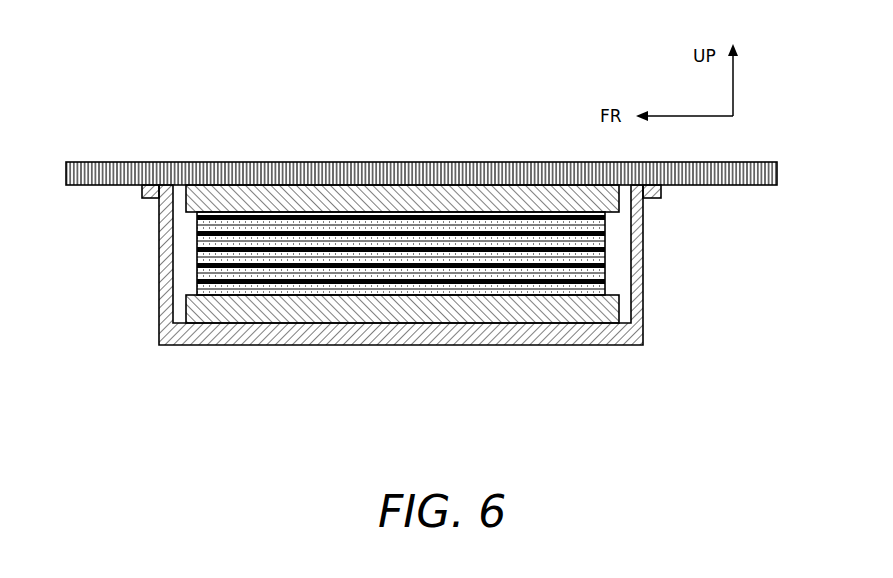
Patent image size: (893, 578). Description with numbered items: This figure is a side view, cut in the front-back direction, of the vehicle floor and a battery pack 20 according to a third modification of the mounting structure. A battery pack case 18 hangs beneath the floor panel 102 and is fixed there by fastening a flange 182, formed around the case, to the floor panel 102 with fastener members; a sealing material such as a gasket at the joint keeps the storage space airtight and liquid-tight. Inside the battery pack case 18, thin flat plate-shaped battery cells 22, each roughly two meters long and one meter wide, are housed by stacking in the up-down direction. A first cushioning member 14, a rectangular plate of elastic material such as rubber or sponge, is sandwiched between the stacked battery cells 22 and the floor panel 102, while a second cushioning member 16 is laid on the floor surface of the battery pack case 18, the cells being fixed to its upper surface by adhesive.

The floor panel 102 is at (418, 178).
The first cushioning member 14 is at (529, 207).
The second cushioning member 16 is at (303, 313).
The battery pack case 18 is at (397, 337).
The flange 182 is at (150, 198).
The battery cell 22 is at (234, 232).
The battery pack 20 is at (645, 375).